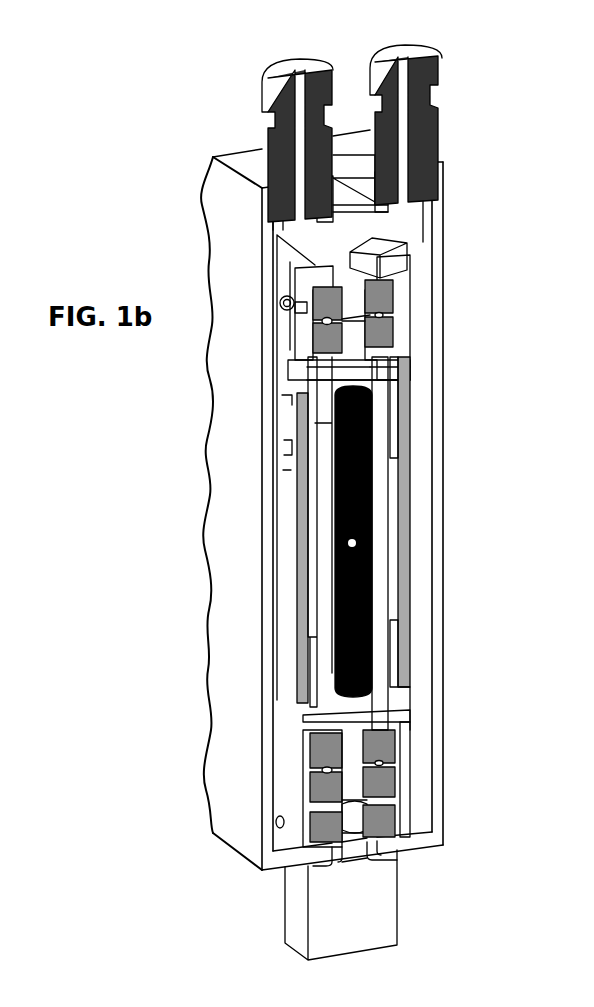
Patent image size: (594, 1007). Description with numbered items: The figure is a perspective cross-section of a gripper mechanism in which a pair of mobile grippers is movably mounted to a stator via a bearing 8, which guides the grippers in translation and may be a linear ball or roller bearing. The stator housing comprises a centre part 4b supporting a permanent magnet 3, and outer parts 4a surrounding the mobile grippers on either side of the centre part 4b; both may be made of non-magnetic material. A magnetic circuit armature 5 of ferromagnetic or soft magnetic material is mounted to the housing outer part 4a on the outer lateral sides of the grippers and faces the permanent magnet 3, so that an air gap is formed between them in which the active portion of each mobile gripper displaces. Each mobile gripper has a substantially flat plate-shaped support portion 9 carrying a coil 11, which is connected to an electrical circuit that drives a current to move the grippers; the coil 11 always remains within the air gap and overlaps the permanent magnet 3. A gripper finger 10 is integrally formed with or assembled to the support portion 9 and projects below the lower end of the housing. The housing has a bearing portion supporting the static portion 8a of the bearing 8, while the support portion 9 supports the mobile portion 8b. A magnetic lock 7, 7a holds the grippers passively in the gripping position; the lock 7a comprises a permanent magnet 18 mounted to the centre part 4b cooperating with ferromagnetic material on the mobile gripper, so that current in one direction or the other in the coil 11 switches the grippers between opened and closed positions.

The permanent magnet 3 is at (360, 583).
The housing outer part 4a is at (273, 513).
The housing centre part 4b is at (357, 727).
The magnetic circuit armature 5 is at (303, 540).
The magnetic lock 7 is at (355, 817).
The magnetic lock 7a is at (326, 827).
The bearing 8 is at (410, 302).
The static portion of the bearing 8a is at (380, 333).
The mobile portion of the bearing 8b is at (380, 296).
The support portion 9 is at (410, 367).
The gripper finger 10 is at (373, 887).
The coil 11 is at (323, 687).
The permanent magnet 18 is at (379, 821).